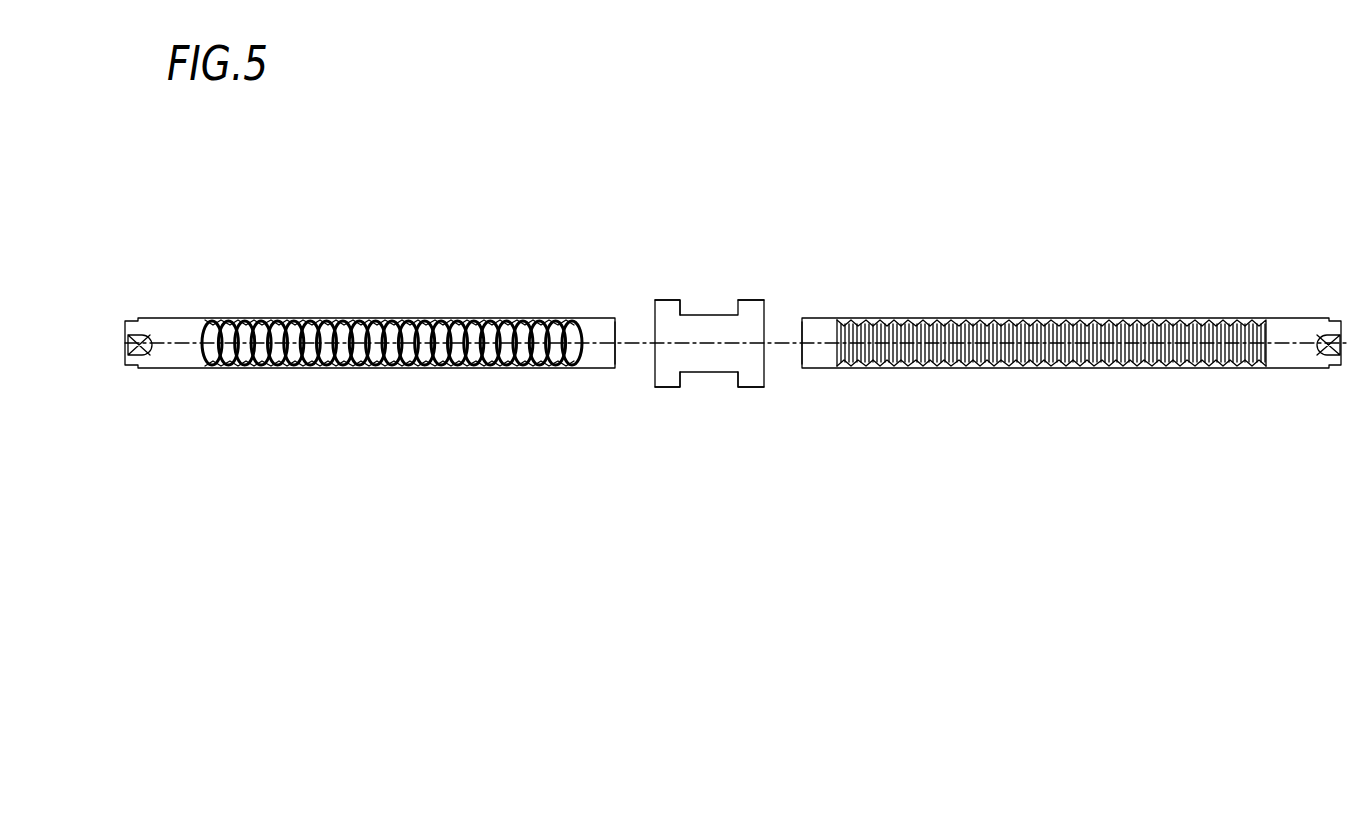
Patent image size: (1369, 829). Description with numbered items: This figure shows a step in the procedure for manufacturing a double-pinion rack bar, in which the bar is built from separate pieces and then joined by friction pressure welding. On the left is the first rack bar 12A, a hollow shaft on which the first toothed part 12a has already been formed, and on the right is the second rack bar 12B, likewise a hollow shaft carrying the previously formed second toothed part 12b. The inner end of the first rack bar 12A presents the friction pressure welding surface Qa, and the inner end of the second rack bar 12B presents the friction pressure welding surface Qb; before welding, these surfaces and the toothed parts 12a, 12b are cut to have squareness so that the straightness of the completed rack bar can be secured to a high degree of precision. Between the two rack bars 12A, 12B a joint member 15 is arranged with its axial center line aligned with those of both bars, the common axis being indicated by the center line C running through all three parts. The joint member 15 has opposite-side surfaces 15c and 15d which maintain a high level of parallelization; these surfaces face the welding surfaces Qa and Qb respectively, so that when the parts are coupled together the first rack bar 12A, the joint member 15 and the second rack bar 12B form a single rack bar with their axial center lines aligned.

The first rack bar 12A is at (370, 344).
The first toothed part 12a is at (327, 369).
The second rack bar 12B is at (1071, 344).
The second toothed part 12b is at (1037, 369).
The joint member 15 is at (709, 353).
The opposite-side surface of joint member 15c is at (652, 376).
The opposite-side surface of joint member 15d is at (766, 376).
The friction pressure welding surface Qa is at (617, 329).
The friction pressure welding surface Qb is at (795, 329).
The axis C is at (1298, 342).